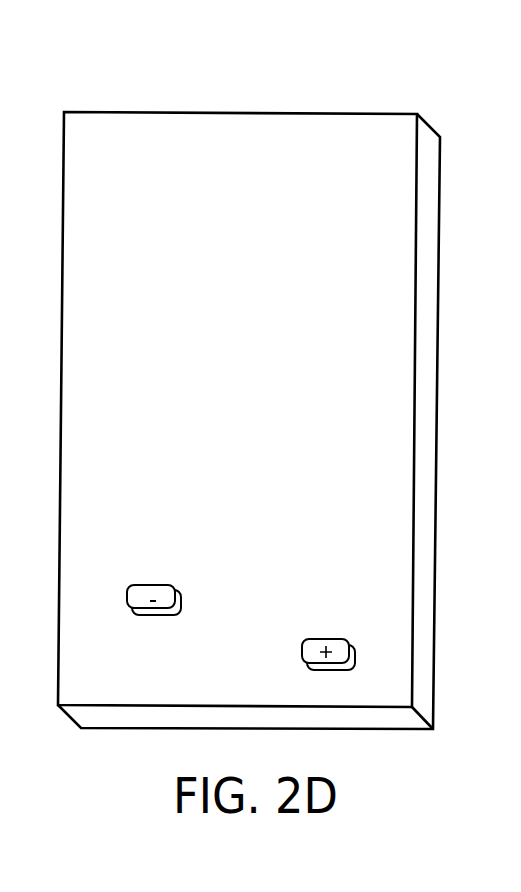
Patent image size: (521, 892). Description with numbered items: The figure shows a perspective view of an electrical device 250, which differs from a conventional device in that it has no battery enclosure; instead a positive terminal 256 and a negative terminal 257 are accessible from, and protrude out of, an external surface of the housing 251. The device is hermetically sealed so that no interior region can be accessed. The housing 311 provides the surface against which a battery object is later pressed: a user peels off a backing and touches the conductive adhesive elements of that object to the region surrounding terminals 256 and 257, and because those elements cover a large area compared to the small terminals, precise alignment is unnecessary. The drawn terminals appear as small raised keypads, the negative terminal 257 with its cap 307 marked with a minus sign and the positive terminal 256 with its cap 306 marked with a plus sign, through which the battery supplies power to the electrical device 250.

The electrical device 250 is at (281, 381).
The housing 251 is at (388, 222).
The housing 311 is at (386, 385).
The negative terminal 257 is at (189, 572).
The minus button key cap 307 is at (172, 590).
The positive terminal 256 is at (318, 642).
The plus button key cap 306 is at (316, 643).